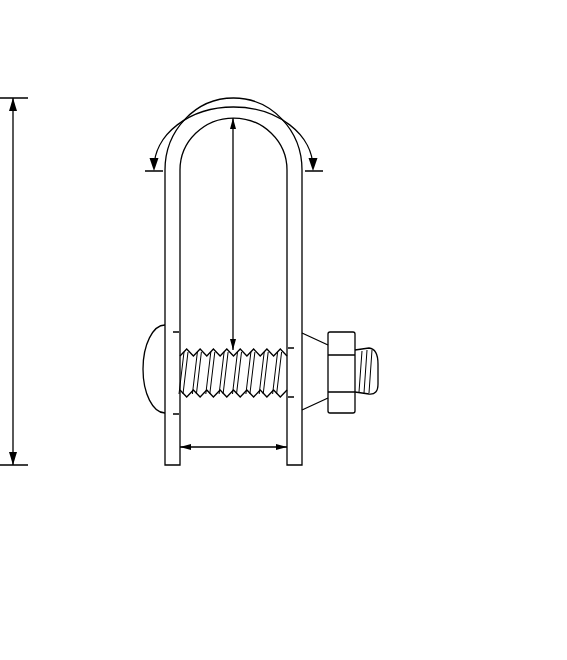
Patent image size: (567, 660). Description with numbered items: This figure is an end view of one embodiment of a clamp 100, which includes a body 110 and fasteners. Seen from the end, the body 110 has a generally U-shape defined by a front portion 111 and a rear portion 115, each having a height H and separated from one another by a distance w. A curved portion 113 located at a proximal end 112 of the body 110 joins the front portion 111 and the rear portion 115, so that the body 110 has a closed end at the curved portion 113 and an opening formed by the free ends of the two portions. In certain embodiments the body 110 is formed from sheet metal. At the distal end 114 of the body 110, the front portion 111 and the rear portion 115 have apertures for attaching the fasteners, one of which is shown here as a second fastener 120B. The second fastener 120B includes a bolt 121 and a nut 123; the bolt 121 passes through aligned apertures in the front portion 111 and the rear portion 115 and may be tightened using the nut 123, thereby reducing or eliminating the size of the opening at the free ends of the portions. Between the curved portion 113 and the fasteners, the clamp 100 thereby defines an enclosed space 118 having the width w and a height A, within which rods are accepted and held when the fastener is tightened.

The clamp 100 is at (135, 85).
The body 110 is at (138, 192).
The front portion 111 is at (165, 237).
The proximal end 112 is at (297, 110).
The curved portion 113 is at (234, 121).
The distal end 114 is at (313, 438).
The rear portion 115 is at (303, 242).
The enclosed space 118 is at (202, 298).
The second fastener 120B is at (143, 438).
The bolt 121 is at (153, 332).
The nut 123 is at (353, 332).